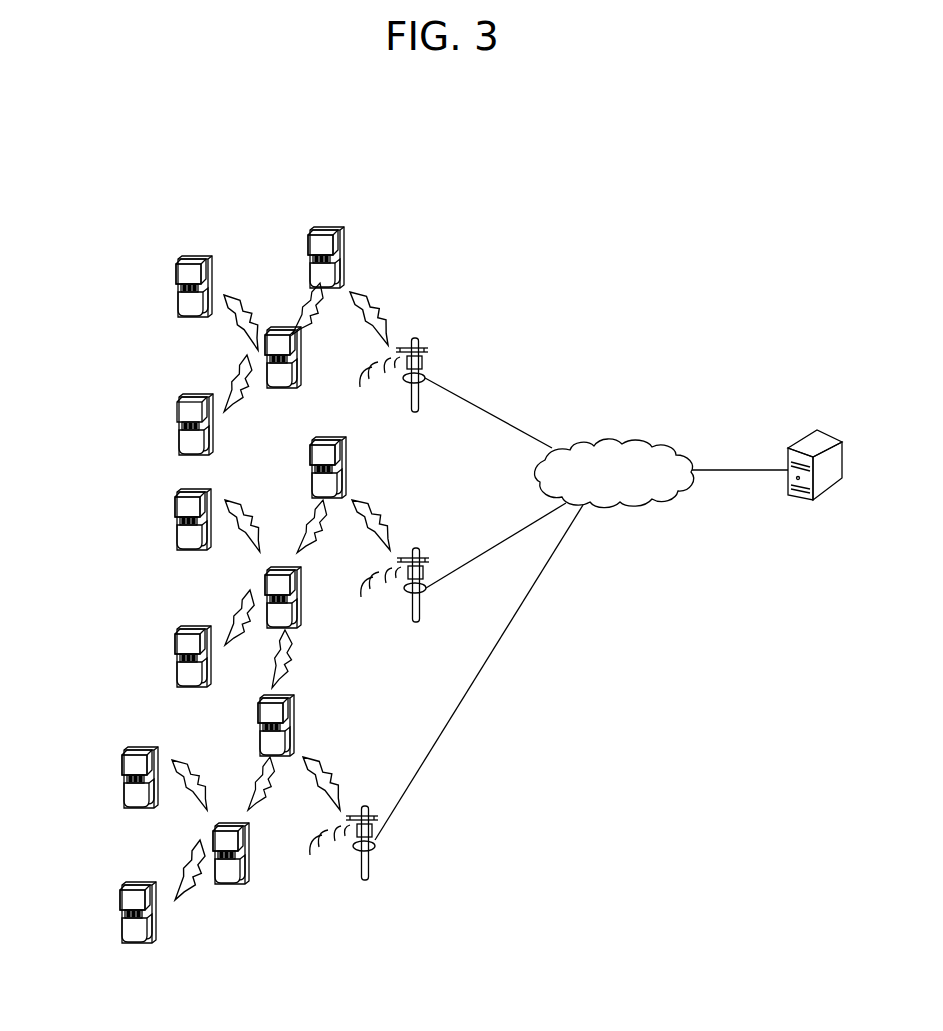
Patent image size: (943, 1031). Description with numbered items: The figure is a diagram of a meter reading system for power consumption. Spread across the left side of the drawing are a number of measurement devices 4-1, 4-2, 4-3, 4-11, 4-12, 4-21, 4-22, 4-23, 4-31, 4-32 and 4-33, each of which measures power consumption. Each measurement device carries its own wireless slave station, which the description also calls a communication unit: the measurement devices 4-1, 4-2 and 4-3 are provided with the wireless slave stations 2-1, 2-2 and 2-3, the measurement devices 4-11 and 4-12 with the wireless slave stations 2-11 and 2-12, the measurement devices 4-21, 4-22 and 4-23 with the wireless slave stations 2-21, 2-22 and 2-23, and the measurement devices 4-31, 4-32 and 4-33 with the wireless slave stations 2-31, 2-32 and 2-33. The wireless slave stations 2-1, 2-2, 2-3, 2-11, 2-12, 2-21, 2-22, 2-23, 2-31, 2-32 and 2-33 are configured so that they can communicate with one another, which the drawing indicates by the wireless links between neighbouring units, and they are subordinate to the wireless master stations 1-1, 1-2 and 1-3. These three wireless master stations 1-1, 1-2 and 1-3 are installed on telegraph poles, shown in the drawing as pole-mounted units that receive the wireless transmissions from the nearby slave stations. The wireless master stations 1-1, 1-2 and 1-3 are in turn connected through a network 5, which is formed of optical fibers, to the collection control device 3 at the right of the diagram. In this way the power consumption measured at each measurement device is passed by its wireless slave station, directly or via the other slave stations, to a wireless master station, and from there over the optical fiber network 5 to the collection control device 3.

The wireless master station 1-1 is at (411, 400).
The wireless master station 1-2 is at (412, 608).
The wireless master station 1-3 is at (362, 866).
The wireless slave station 2-1 is at (326, 268).
The wireless slave station 2-2 is at (186, 300).
The wireless slave station 2-3 is at (282, 375).
The wireless slave station 2-11 is at (322, 482).
The wireless slave station 2-12 is at (280, 742).
The wireless slave station 2-21 is at (284, 611).
The wireless slave station 2-22 is at (188, 672).
The wireless slave station 2-23 is at (188, 536).
The wireless slave station 2-31 is at (227, 870).
The wireless slave station 2-32 is at (136, 791).
The wireless slave station 2-33 is at (134, 930).
The measurement device 4-1 is at (352, 232).
The measurement device 4-2 is at (170, 256).
The measurement device 4-3 is at (272, 401).
The measurement device 4-11 is at (363, 459).
The measurement device 4-12 is at (310, 709).
The measurement device 4-21 is at (316, 572).
The measurement device 4-22 is at (166, 646).
The measurement device 4-23 is at (166, 522).
The measurement device 4-31 is at (261, 874).
The measurement device 4-32 is at (110, 782).
The measurement device 4-33 is at (107, 914).
The network 5 is at (617, 442).
The collection control device 3 is at (810, 430).